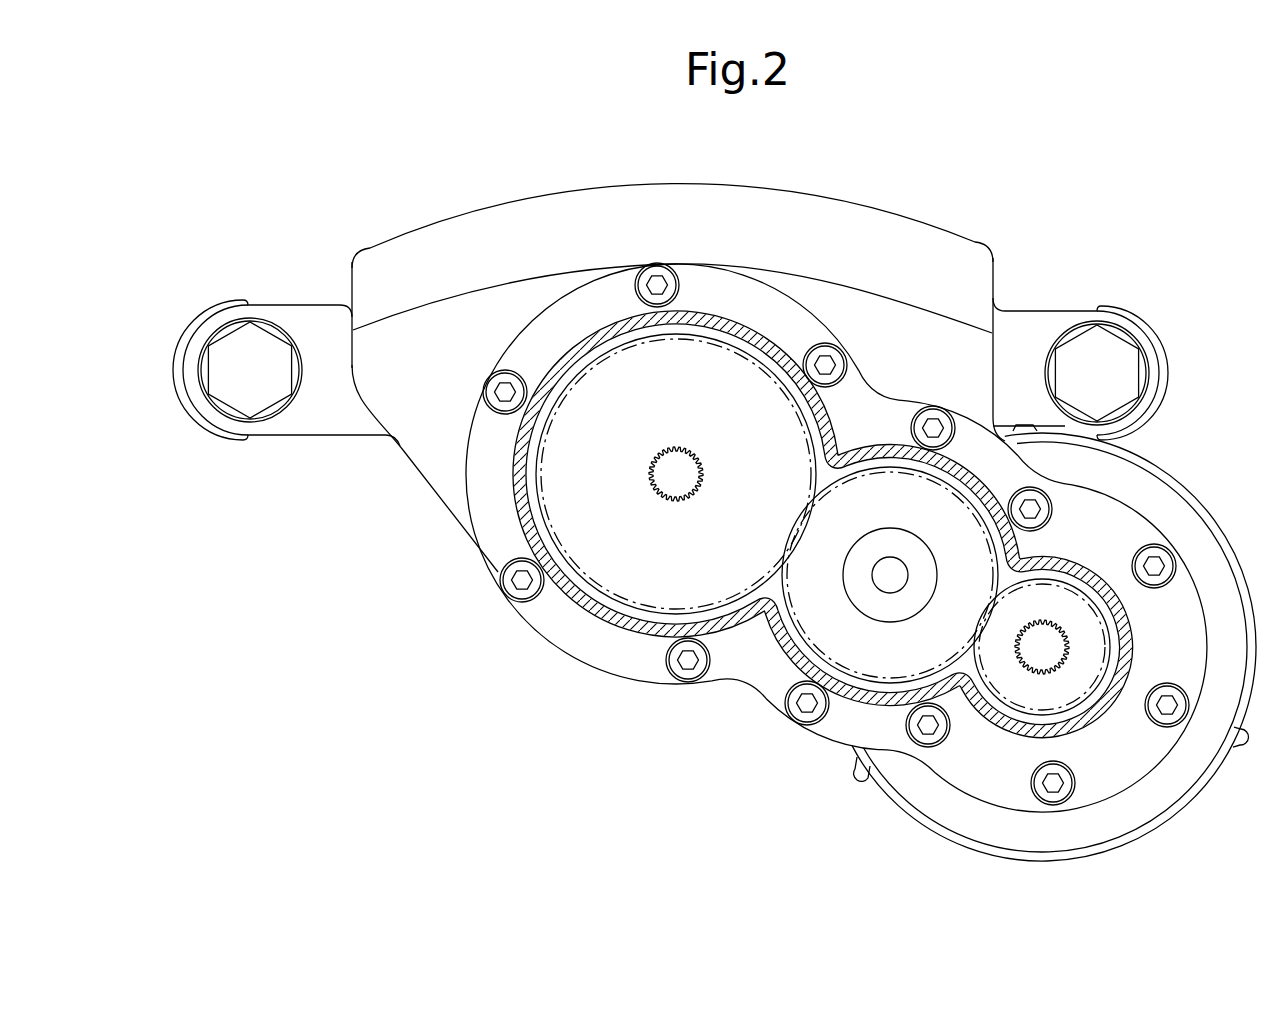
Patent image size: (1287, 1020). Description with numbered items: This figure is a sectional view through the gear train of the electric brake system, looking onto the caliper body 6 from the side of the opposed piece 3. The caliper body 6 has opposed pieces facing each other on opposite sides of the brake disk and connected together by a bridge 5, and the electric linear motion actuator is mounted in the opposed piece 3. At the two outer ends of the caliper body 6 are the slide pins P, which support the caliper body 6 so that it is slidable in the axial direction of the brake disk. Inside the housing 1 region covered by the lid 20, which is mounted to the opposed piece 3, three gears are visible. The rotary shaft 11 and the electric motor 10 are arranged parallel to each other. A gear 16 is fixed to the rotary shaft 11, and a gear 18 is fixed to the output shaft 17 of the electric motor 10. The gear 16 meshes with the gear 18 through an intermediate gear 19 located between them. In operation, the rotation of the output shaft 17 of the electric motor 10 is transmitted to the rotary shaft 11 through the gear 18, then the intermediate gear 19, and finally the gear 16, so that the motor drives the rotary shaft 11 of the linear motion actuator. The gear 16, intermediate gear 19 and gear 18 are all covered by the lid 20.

The housing 1 is at (972, 230).
The opposed piece 3 is at (440, 484).
The bridge 5 is at (623, 205).
The caliper body 6 is at (383, 230).
The electric motor 10 is at (1157, 827).
The rotary shaft 11 is at (660, 493).
The gear 16 is at (635, 610).
The output shaft 17 is at (1033, 652).
The gear 18 is at (1037, 714).
The intermediate gear 19 is at (858, 677).
The lid 20 is at (775, 633).
The slide pins P is at (233, 353).